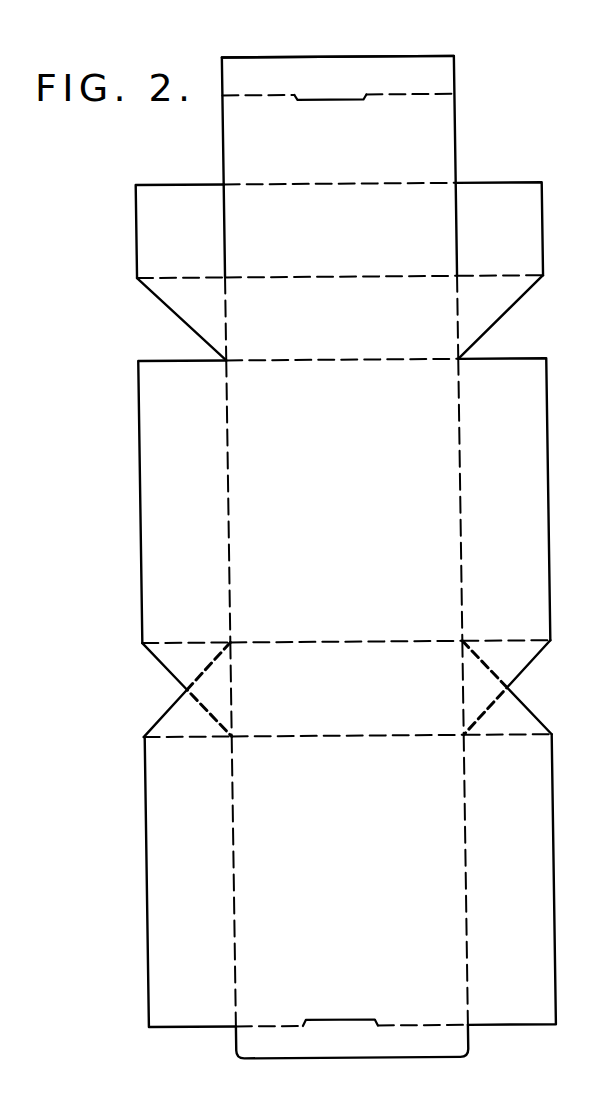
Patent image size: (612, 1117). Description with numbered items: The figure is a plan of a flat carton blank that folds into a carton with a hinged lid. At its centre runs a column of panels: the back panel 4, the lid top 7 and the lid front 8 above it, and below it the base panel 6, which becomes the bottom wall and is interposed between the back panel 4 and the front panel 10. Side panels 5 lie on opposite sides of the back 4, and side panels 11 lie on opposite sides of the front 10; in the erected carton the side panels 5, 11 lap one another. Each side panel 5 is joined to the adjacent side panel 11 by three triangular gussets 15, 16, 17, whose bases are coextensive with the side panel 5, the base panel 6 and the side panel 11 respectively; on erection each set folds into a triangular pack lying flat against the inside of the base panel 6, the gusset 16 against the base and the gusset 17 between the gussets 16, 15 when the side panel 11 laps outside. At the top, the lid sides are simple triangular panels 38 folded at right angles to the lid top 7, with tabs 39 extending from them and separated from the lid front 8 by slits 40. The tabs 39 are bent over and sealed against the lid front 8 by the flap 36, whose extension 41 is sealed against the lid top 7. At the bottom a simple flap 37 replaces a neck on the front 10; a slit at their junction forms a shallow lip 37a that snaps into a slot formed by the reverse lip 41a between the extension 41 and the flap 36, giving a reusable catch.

The back panel 4 is at (340, 517).
The side panel 5 is at (170, 518).
The base panel 6 is at (334, 709).
The lid top panel 7 is at (326, 341).
The lid front panel 8 is at (323, 242).
The front panel 10 is at (335, 889).
The side panel 11 is at (165, 890).
The triangular gusset 15 is at (184, 654).
The triangular gusset 16 is at (205, 698).
The triangular gusset 17 is at (186, 728).
The flap 36 is at (331, 156).
The flap 37 is at (338, 1056).
The shallow lip 37a is at (335, 1020).
The lid side 38 is at (188, 302).
The tab 39 is at (177, 201).
The slit 40 is at (220, 242).
The extension 41 is at (330, 77).
The reverse lip 41a is at (316, 104).